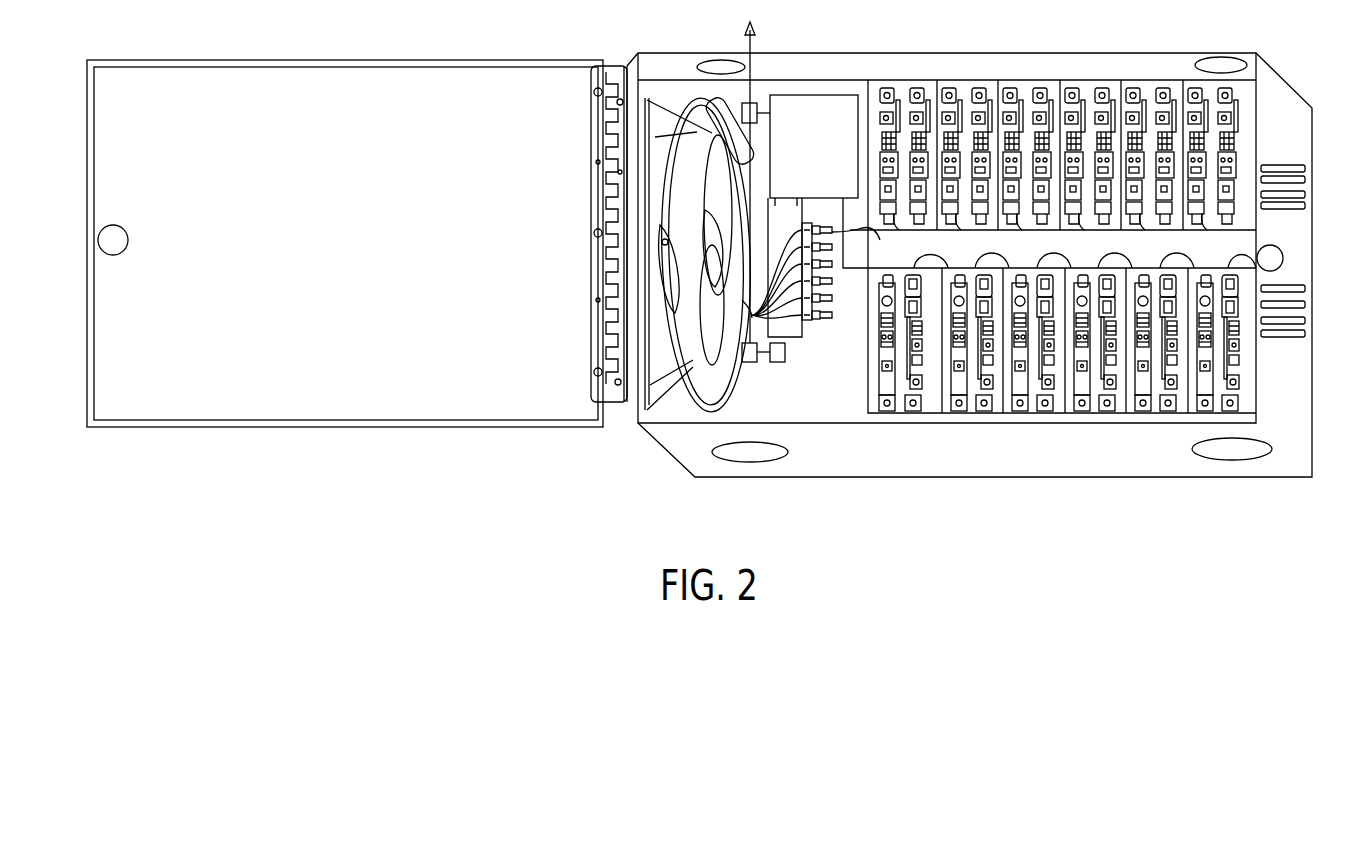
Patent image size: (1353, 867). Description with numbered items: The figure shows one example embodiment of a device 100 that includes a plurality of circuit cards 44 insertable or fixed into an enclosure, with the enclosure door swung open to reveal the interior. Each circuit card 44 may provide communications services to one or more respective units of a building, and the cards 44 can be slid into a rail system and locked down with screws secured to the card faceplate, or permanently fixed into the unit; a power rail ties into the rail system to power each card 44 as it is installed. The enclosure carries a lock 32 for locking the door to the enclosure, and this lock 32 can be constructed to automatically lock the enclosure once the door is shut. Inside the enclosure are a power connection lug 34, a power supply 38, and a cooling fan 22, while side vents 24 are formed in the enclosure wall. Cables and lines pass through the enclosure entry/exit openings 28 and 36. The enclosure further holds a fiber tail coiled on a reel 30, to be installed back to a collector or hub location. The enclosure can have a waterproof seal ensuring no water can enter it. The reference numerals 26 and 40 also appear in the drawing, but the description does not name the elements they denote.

The cooling fan 22 is at (1275, 258).
The side vents 24 is at (1293, 205).
The sensor 26 is at (753, 358).
The enclosure entry/exit 28 is at (753, 455).
The reel 30 is at (695, 365).
The lock 32 is at (126, 237).
The power connection lug 34 is at (742, 108).
The enclosure entry/exit 36 is at (722, 62).
The power supply 38 is at (813, 216).
The connector 40 is at (863, 234).
The circuit card 44 is at (952, 95).
The device 100 is at (1128, 478).